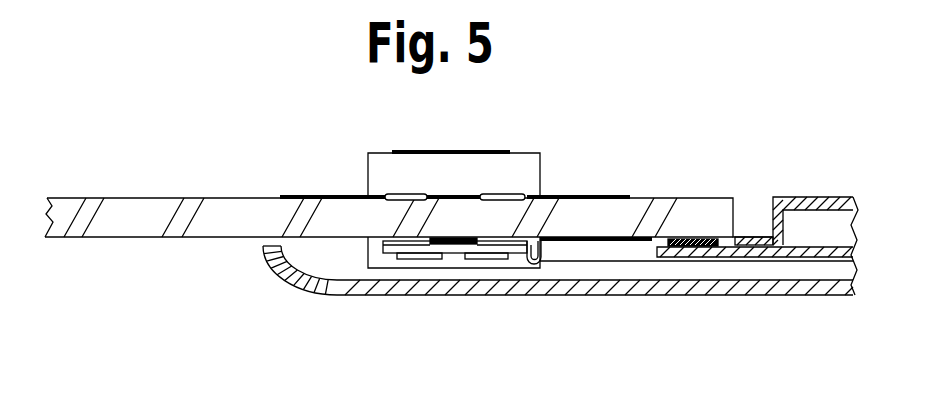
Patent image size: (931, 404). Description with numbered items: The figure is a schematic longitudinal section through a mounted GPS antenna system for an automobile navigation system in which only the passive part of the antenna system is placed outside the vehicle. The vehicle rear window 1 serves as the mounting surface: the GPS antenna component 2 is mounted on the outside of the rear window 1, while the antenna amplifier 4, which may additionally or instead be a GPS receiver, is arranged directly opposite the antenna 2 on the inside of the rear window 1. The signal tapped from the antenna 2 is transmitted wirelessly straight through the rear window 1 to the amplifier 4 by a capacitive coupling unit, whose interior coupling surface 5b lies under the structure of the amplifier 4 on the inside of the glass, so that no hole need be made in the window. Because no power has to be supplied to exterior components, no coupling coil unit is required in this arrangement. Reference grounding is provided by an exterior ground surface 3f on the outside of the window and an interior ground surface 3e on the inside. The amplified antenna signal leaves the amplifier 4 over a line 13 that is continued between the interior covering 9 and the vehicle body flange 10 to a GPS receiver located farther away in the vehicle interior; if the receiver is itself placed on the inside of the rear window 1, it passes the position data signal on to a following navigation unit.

The vehicle rear window 1 is at (127, 225).
The GPS antenna component 2 is at (448, 168).
The exterior ground surface 3f is at (323, 195).
The interior ground surface 3e is at (612, 242).
The antenna amplifier 4 is at (478, 259).
The interior coupling surface 5b is at (450, 244).
The interior covering 9 is at (277, 262).
The vehicle body flange 10 is at (765, 252).
The line 13 is at (670, 248).